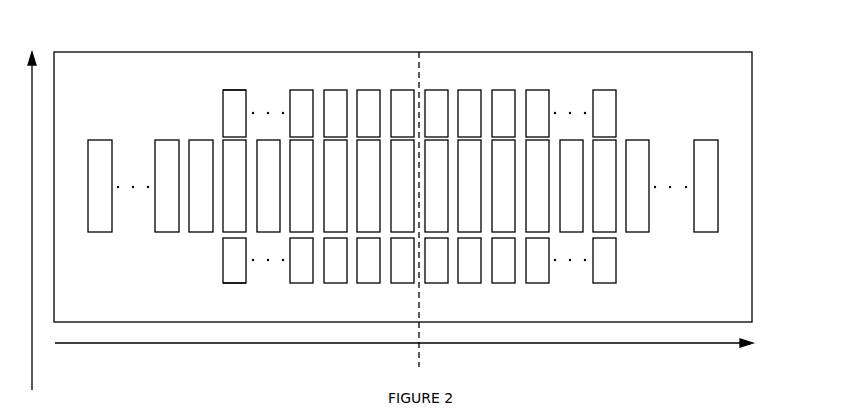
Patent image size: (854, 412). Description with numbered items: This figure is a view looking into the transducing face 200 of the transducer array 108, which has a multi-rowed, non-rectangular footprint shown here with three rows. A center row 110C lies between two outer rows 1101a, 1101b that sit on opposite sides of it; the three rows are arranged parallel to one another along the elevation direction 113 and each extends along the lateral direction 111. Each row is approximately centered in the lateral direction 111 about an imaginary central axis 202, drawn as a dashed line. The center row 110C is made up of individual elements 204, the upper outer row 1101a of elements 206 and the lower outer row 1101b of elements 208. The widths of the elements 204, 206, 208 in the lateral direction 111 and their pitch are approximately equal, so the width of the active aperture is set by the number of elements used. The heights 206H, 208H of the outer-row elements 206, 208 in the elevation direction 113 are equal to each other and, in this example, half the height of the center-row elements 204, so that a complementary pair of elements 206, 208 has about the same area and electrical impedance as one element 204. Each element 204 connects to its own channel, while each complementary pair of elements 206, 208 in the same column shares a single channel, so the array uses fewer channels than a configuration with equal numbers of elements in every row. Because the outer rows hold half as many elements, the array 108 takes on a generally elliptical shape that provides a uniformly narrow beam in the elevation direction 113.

The transducer array 108 is at (752, 107).
The transducing face 200 is at (740, 153).
The imaginary central axis 202 is at (420, 355).
The individual elements of the center row 204 is at (112, 170).
The elements of the first outer row 206 is at (223, 112).
The height of top row element 206H is at (235, 90).
The elements of the second outer row 208 is at (223, 260).
The height of bottom row element 208H is at (233, 283).
The outer row 1101a is at (435, 101).
The outer row 1101b is at (447, 274).
The center row 110C is at (451, 173).
The lateral direction 111 is at (168, 343).
The elevation direction 113 is at (32, 360).